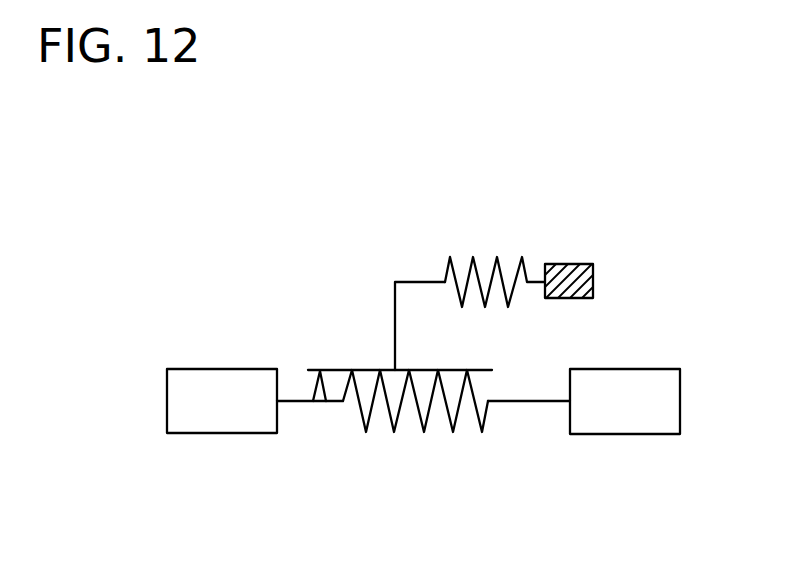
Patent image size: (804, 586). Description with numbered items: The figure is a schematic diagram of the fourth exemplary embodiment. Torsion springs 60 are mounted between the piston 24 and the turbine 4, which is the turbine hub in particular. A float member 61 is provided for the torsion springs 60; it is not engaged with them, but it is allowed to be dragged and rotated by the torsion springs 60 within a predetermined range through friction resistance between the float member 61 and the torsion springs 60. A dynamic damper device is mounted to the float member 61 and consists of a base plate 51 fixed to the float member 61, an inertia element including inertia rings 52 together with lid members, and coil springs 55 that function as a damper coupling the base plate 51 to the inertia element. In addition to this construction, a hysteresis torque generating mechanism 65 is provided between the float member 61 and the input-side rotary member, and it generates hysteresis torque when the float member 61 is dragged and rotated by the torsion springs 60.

The piston 24 is at (217, 369).
The turbine 4 is at (653, 369).
The base plate 51 is at (415, 282).
The coil springs 55 is at (473, 263).
The inertia rings 52 is at (567, 264).
The torsion springs 60 is at (424, 432).
The float member 61 is at (347, 365).
The hysteresis torque generating mechanism 65 is at (313, 392).